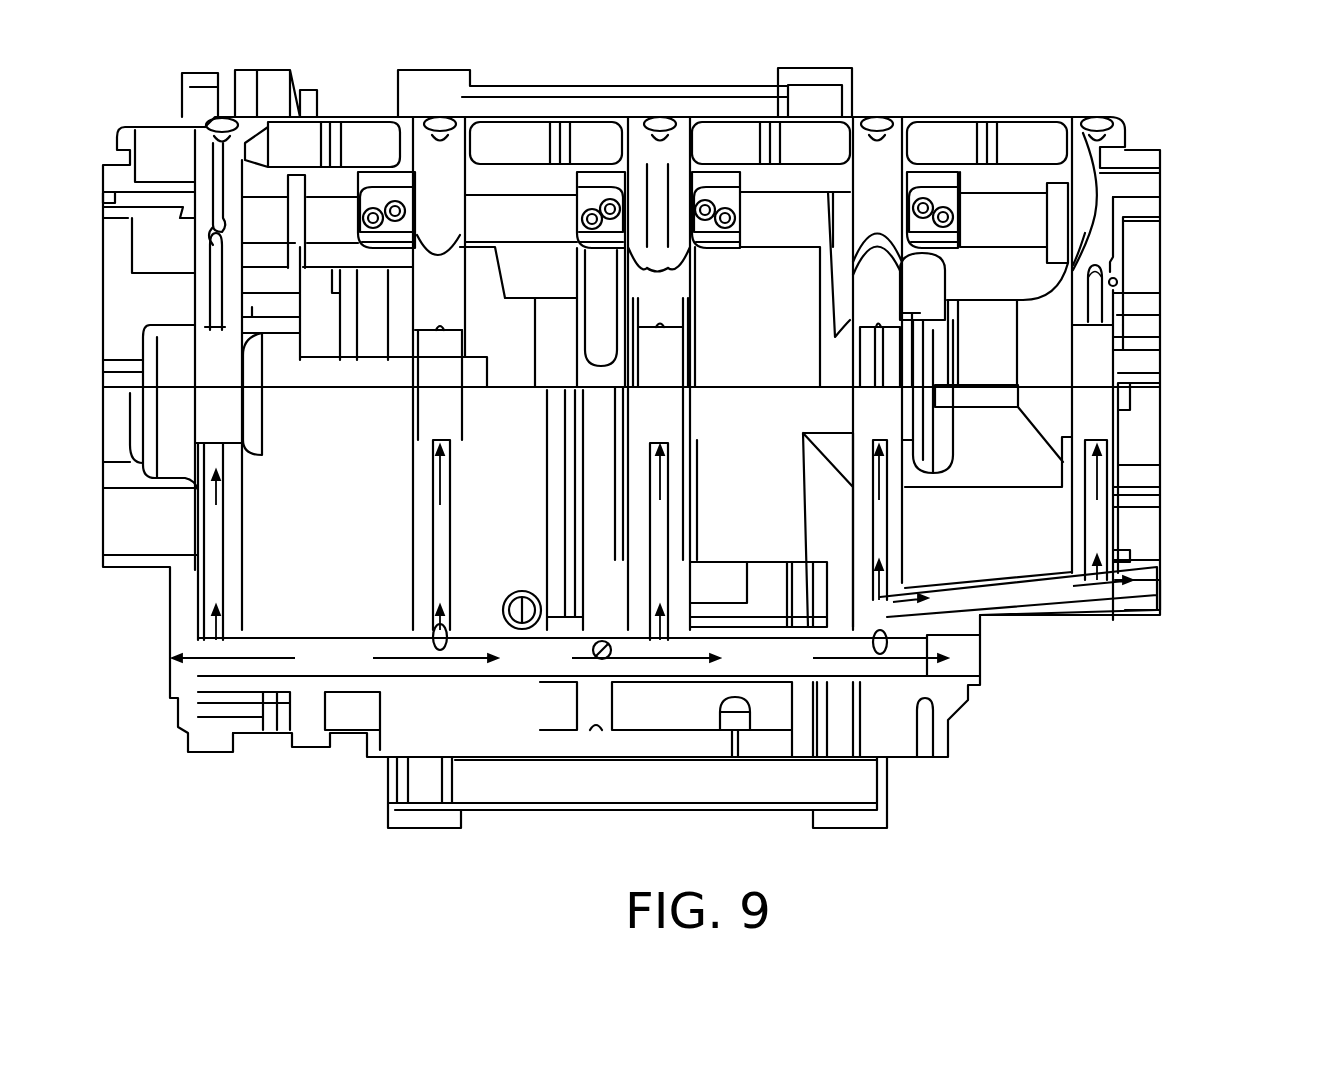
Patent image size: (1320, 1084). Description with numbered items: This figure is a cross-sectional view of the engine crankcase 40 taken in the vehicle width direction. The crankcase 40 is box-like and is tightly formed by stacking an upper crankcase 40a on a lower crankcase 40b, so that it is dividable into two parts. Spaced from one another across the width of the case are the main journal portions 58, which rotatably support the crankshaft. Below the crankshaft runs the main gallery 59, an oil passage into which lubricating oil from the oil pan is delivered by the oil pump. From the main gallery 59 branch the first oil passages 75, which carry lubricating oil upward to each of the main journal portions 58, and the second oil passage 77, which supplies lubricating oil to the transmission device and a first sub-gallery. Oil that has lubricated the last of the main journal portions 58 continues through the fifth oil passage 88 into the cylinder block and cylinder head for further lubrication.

The crankcase 40 is at (1250, 318).
The upper crankcase 40a is at (1145, 335).
The lower crankcase 40b is at (1148, 432).
The main journal portions 58 is at (425, 387).
The main gallery 59 is at (363, 657).
The first oil passages 75 is at (440, 522).
The second oil passage 77 is at (558, 460).
The fifth oil passage 88 is at (1093, 300).